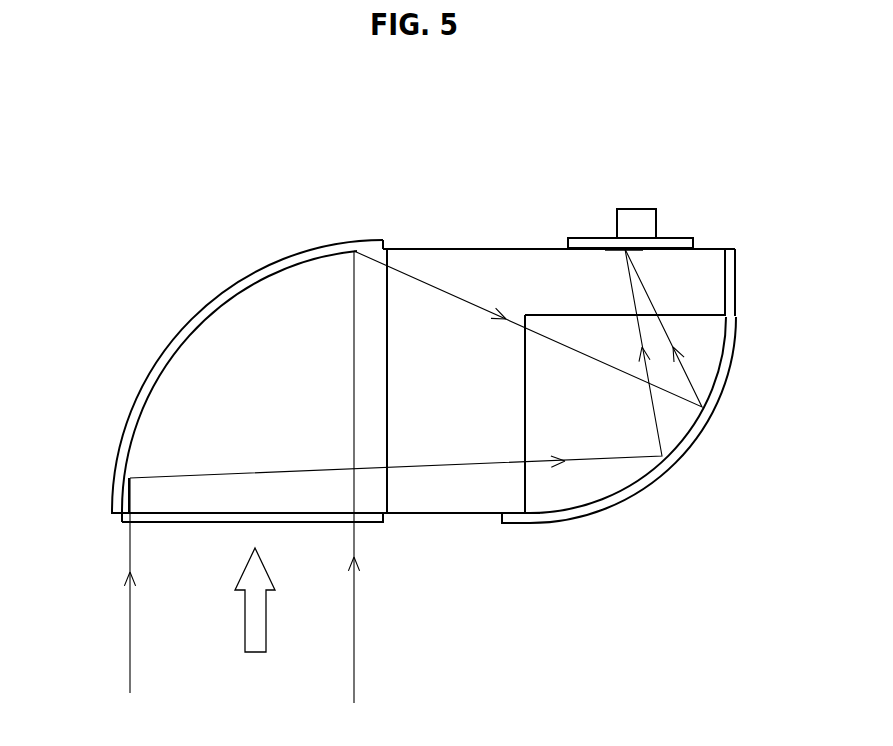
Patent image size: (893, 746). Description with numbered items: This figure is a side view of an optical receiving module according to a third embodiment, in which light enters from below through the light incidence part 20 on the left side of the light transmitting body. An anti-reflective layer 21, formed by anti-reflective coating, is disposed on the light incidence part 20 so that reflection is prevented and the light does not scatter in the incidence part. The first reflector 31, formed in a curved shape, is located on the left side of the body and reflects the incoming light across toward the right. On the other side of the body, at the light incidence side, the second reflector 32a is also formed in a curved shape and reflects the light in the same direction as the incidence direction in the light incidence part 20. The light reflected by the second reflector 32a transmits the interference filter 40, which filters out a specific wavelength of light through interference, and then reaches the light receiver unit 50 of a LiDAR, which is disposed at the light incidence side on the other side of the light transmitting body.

The light incidence part 20 is at (155, 513).
The anti-reflective layer 21 is at (158, 518).
The first reflector 31 is at (210, 307).
The second reflector 32a is at (687, 442).
The interference filter 40 is at (593, 237).
The light receiver unit 50 is at (642, 220).